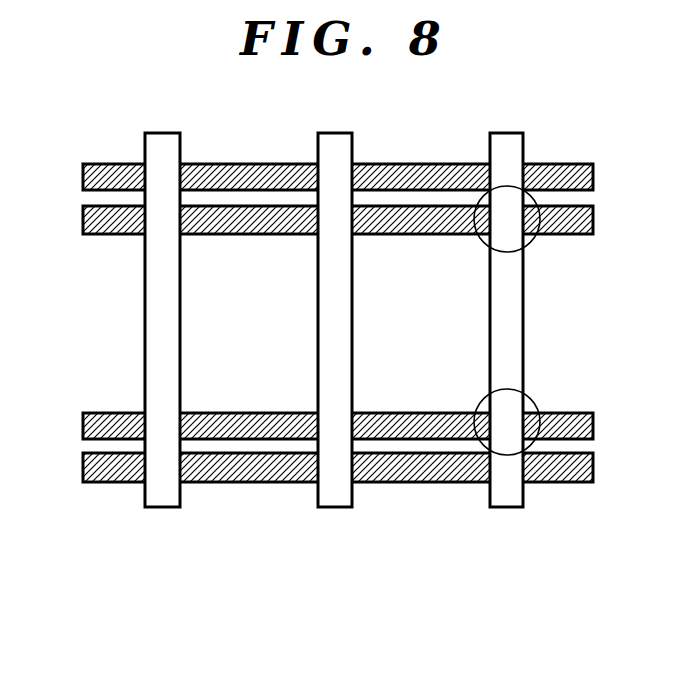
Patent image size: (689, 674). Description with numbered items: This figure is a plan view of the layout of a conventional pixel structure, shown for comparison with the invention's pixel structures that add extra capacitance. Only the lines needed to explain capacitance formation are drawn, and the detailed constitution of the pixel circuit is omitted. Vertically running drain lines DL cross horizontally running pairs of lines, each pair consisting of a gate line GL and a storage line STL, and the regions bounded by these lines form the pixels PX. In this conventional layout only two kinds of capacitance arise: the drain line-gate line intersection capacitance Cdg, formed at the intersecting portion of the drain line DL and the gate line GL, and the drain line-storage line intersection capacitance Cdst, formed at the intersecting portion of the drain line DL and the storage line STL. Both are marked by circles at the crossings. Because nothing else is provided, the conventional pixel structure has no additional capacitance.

The gate line GL is at (103, 163).
The storage line STL is at (112, 235).
The drain line DL is at (163, 509).
The pixel PX is at (306, 362).
The drain line-storage line intersection capacitance Cdst is at (532, 238).
The drain line-gate line intersection capacitance Cdg is at (535, 403).